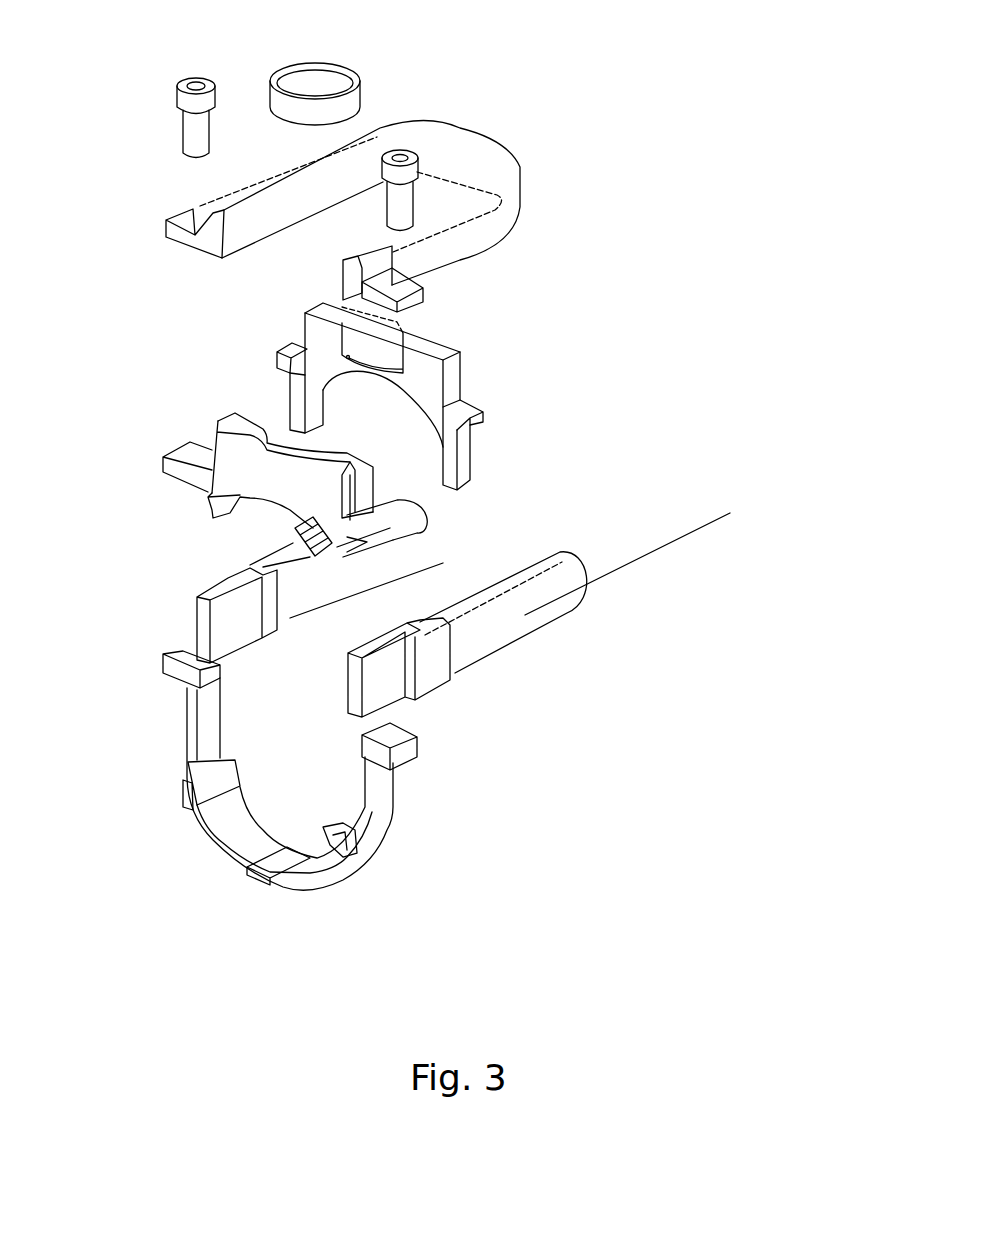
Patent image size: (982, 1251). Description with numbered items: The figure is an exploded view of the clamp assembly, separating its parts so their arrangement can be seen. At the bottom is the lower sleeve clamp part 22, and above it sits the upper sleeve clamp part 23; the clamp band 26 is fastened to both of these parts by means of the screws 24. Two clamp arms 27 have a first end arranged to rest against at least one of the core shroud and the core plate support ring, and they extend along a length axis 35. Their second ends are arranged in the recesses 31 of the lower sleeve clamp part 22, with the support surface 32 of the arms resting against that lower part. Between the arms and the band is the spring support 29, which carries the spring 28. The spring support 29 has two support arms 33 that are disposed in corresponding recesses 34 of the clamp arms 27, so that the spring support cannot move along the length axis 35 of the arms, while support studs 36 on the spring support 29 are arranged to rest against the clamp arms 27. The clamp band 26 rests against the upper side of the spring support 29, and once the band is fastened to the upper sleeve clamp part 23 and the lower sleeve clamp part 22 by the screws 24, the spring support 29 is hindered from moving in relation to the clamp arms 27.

The lower sleeve clamp part 22 is at (285, 717).
The upper sleeve clamp part 23 is at (207, 497).
The screws 24 is at (190, 141).
The clamp band 26 is at (498, 212).
The clamp arms 27 is at (490, 613).
The spring 28 is at (347, 103).
The spring support 29 is at (391, 398).
The recesses 31 is at (190, 718).
The support surface 32 is at (228, 578).
The support arms 33 is at (313, 413).
The recesses 34 is at (413, 625).
The length axis 35 is at (543, 602).
The support studs 36 is at (278, 357).